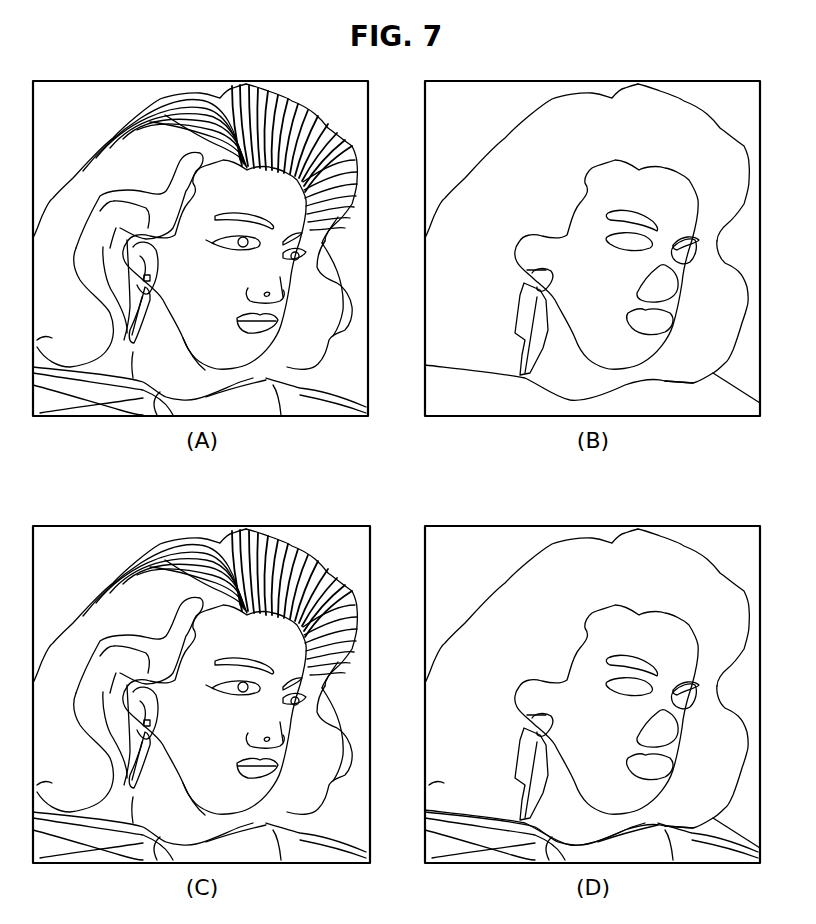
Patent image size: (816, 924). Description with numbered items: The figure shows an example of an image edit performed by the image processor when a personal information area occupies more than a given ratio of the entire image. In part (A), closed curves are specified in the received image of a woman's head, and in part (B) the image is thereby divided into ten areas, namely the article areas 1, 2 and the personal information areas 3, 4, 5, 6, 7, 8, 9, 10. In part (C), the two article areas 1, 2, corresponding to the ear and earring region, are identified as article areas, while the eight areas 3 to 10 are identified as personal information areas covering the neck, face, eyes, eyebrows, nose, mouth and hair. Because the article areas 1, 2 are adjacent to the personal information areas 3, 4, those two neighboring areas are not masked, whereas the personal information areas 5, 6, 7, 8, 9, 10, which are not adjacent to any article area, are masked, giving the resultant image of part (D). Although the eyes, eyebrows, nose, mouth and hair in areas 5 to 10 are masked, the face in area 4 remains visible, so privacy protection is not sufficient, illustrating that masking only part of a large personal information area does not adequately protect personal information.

The article area 1 is at (343, 500).
The article area 2 is at (334, 551).
The personal information area 3 is at (412, 597).
The personal information area 4 is at (410, 487).
The personal information area 5 is at (424, 470).
The personal information area 6 is at (436, 432).
The personal information area 7 is at (488, 453).
The personal information area 8 is at (494, 477).
The personal information area 9 is at (463, 546).
The personal information area 10 is at (396, 466).